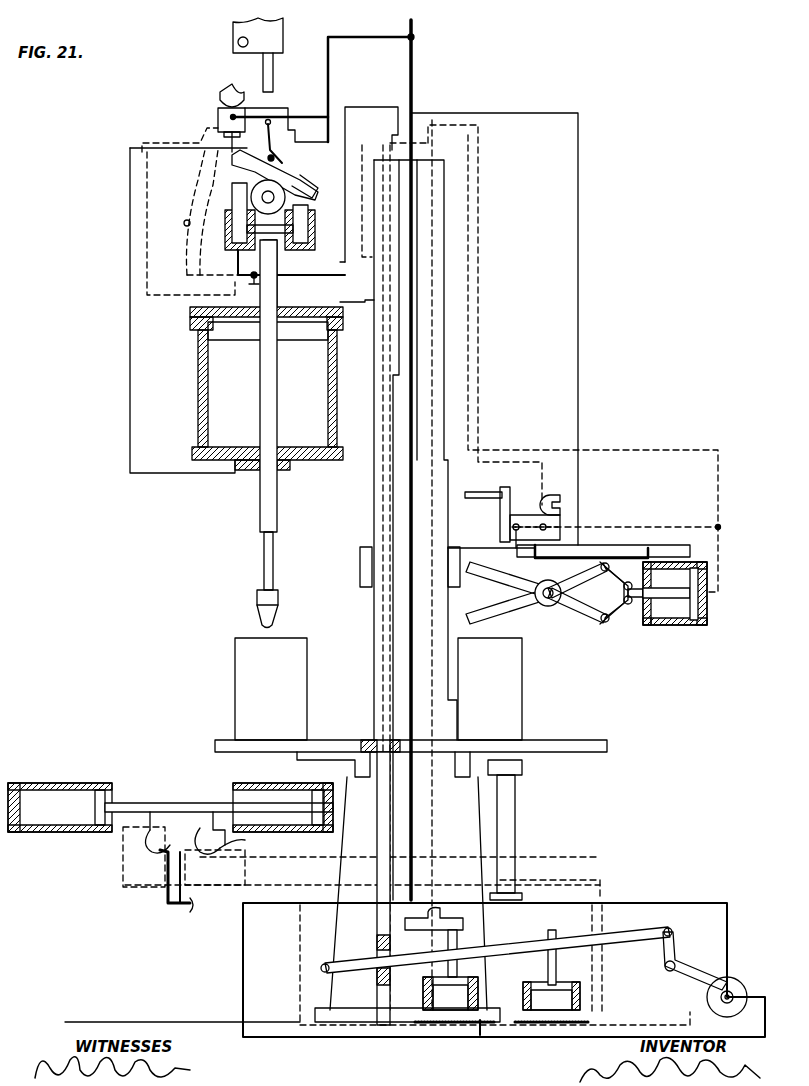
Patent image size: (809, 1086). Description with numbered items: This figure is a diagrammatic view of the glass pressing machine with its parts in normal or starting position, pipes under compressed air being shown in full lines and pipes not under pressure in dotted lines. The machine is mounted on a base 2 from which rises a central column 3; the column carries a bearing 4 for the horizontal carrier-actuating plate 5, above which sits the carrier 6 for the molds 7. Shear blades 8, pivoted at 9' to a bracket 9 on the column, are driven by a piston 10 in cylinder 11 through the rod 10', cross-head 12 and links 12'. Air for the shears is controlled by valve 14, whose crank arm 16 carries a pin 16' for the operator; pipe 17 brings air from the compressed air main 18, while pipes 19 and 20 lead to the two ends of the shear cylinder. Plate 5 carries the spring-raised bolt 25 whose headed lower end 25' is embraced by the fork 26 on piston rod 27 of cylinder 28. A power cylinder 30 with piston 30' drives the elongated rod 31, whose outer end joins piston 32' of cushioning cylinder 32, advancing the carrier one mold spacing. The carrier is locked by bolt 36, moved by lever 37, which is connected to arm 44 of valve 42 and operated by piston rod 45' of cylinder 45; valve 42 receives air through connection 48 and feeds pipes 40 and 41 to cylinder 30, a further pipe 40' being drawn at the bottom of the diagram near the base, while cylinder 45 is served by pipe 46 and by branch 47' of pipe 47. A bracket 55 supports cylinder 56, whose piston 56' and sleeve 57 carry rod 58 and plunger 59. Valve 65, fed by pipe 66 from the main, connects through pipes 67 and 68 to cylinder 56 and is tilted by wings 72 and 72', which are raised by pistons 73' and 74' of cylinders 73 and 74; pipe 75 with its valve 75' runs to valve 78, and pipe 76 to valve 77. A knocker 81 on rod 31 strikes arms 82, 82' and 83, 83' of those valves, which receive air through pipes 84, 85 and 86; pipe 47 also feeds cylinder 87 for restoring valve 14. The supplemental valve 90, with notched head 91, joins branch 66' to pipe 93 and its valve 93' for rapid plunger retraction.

The base 2 is at (150, 1021).
The central column 3 is at (374, 665).
The bearing 4 is at (466, 778).
The carrier-actuating plate 5 is at (524, 762).
The carrier 6 is at (580, 742).
The mold 7 is at (235, 690).
The shear blades 8 is at (512, 580).
The bracket 9 is at (491, 542).
The shear pivot 9' is at (548, 606).
The piston 10 is at (675, 605).
The piston rod 10' is at (678, 594).
The shear cylinder 11 is at (660, 626).
The cross-head 12 is at (621, 593).
The links 12' is at (577, 593).
The valve 14 is at (518, 513).
The crank arm 16 is at (491, 514).
The pin 16' is at (483, 484).
The pipe 17 is at (578, 318).
The compressed air main 18 is at (417, 37).
The pipe 19 is at (665, 527).
The pipe 20 is at (605, 550).
The bolt 25 is at (522, 834).
The headed lower end 25' is at (520, 895).
The fork 26 is at (463, 925).
The piston rod 27 is at (448, 940).
The cylinder 28 is at (423, 985).
The power cylinder 30 is at (283, 798).
The piston 30' is at (311, 794).
The rod 31 is at (176, 803).
The cushioning cylinder 32 is at (60, 798).
The piston 32' is at (83, 807).
The bolt 36 is at (375, 738).
The lever 37 is at (640, 938).
The pipe 40 is at (480, 965).
The pipe 40' is at (469, 1045).
The pipe 41 is at (243, 948).
The valve 42 is at (732, 985).
The arm 44 is at (700, 978).
The cylinder 45 is at (551, 996).
The piston rod 45' is at (565, 957).
The pipe 46 is at (480, 150).
The pipe 47 is at (345, 565).
The branch pipe 47' is at (584, 946).
The compressed air connection 48 is at (700, 904).
The bracket 55 is at (358, 452).
The cylinder 56 is at (252, 377).
The piston 56' is at (268, 340).
The sleeve 57 is at (277, 405).
The plunger rod 58 is at (273, 555).
The plunger 59 is at (273, 608).
The valve 65 is at (292, 160).
The pipe 66 is at (369, 89).
The branch pipe 66' is at (280, 101).
The pipe 67 is at (162, 143).
The pipe 68 is at (130, 300).
The wing 72 is at (263, 191).
The wing 72' is at (317, 186).
The cylinder 73 is at (213, 230).
The piston 73' is at (223, 213).
The cylinder 74 is at (312, 232).
The piston 74' is at (318, 224).
The pipe 75 is at (360, 466).
The valve 75' is at (291, 273).
The pipe 76 is at (372, 280).
The valve 77 is at (144, 857).
The valve 78 is at (215, 867).
The knocker 81 is at (215, 812).
The arm 82 is at (204, 833).
The arm 82' is at (252, 838).
The arm 83 is at (149, 805).
The arm 83' is at (163, 837).
The pipe 84 is at (170, 905).
The pipe 85 is at (166, 895).
The pipe 86 is at (195, 905).
The cylinder 87 is at (553, 492).
The supplemental valve 90 is at (218, 110).
The actuating head 91 is at (222, 95).
The pipe 93 is at (185, 212).
The valve 93' is at (189, 212).